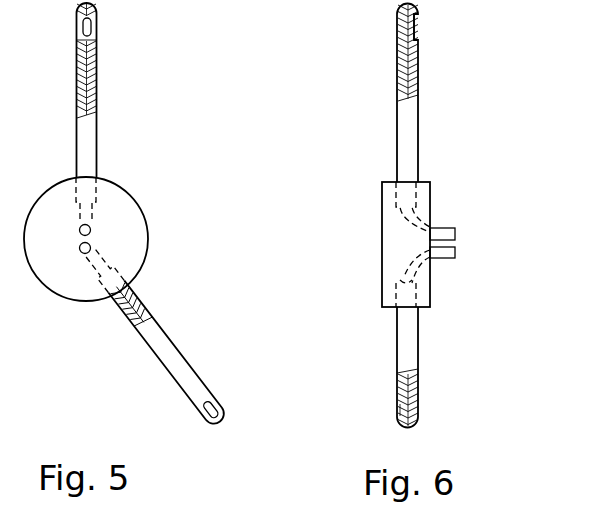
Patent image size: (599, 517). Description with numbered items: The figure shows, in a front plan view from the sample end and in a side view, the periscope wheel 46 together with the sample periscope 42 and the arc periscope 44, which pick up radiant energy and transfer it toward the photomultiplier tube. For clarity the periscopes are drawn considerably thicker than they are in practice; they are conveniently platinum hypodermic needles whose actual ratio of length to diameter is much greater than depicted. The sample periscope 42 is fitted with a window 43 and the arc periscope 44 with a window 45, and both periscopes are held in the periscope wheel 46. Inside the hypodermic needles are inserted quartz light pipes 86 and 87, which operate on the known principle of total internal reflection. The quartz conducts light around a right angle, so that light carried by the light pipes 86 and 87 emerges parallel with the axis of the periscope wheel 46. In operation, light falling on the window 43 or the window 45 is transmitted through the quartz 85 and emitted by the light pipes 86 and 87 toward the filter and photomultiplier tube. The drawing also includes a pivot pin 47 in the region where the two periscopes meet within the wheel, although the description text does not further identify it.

In FIG. 5, the sample periscope 42 is at (85, 145).
In FIG. 6, the sample periscope 42 is at (406, 147).
In FIG. 5, the window 43 is at (94, 24).
In FIG. 6, the window 43 is at (416, 28).
In FIG. 5, the arc periscope 44 is at (173, 353).
In FIG. 6, the arc periscope 44 is at (405, 350).
In FIG. 5, the window 45 is at (213, 393).
In FIG. 6, the window 45 is at (400, 410).
In FIG. 5, the periscope wheel 46 is at (113, 201).
In FIG. 6, the periscope wheel 46 is at (422, 200).
In FIG. 5, the pivot pin 47 is at (91, 248).
In FIG. 5, the quartz 85 is at (93, 71).
In FIG. 6, the quartz 85 is at (407, 78).
In FIG. 5, the quartz light pipe 86 is at (91, 229).
In FIG. 6, the quartz light pipe 86 is at (455, 232).
In FIG. 6, the quartz light pipe 87 is at (455, 252).